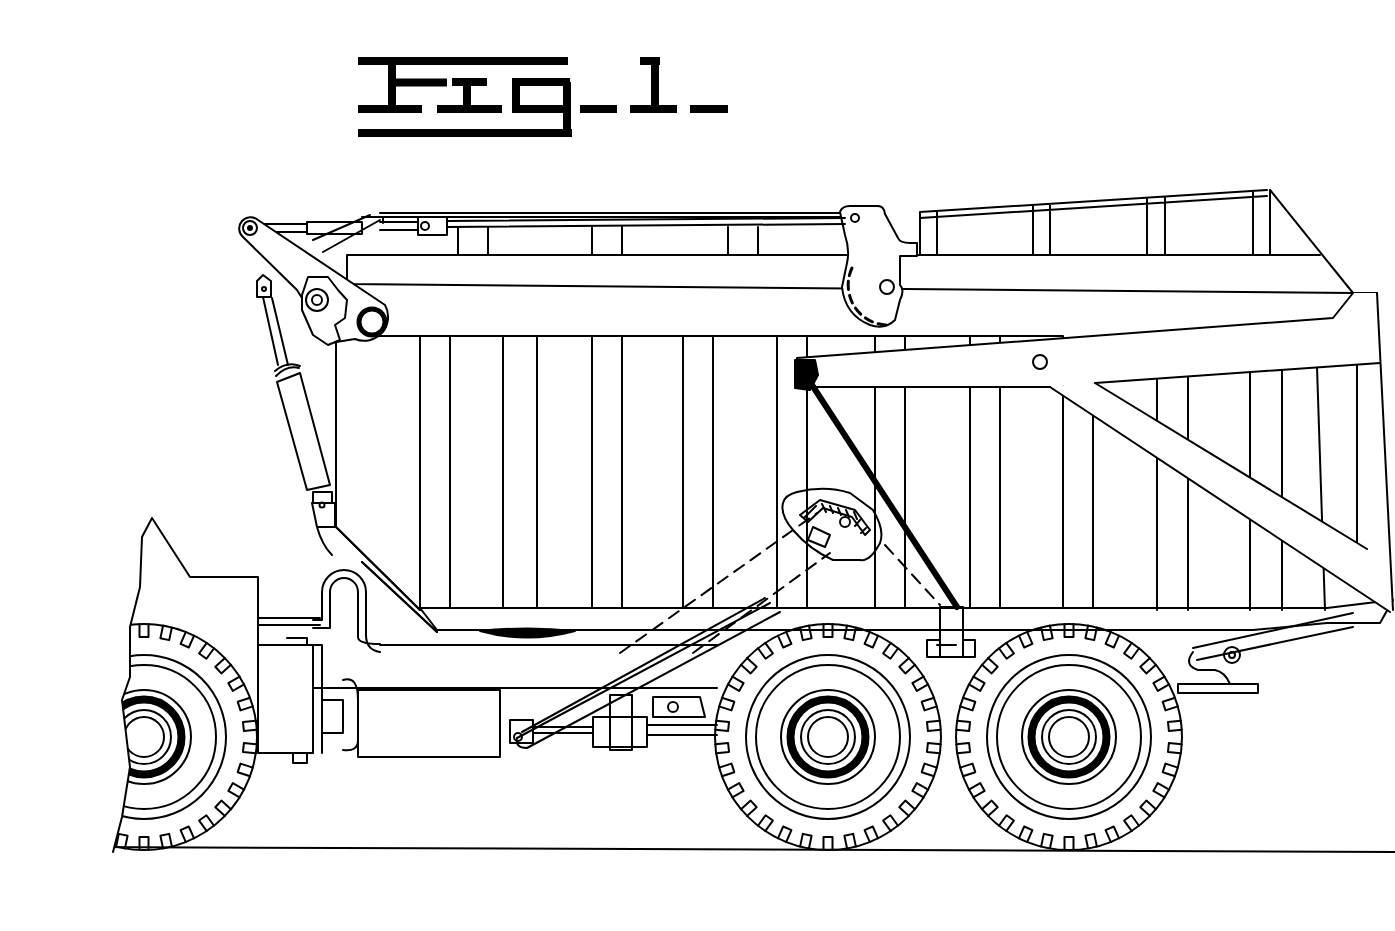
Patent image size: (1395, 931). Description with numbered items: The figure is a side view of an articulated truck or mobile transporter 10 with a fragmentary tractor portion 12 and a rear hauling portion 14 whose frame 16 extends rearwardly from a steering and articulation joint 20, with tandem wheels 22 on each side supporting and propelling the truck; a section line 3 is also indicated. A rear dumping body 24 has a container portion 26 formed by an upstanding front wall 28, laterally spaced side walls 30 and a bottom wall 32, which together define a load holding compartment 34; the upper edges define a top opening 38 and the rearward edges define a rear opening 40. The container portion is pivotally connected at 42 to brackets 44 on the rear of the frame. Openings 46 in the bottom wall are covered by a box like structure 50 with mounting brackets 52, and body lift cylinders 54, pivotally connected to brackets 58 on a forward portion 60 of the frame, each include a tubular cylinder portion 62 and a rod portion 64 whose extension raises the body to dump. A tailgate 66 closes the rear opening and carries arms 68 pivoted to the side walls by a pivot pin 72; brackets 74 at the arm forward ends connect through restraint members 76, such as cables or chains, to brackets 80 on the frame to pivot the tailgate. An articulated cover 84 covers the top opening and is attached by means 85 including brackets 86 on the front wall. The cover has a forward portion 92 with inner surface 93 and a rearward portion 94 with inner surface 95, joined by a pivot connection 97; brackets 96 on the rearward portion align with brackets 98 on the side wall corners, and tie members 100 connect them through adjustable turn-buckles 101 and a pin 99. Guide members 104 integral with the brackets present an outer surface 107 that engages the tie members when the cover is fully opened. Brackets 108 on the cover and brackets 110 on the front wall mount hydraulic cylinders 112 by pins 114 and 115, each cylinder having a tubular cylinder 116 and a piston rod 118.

The section line 3- 3 is at (222, 190).
The articulated truck 10 is at (945, 130).
The tractor portion 12 is at (200, 495).
The rear hauling portion 14 is at (608, 770).
The frame 16 is at (1180, 690).
The steering and articulation joint 20 is at (330, 808).
The tandem wheels 22 is at (1015, 768).
The rear dumping body 24 is at (470, 655).
The container portion 26 is at (577, 463).
The front wall 28 is at (330, 390).
The side walls 30 is at (383, 540).
The bottom wall 32 is at (605, 647).
The load holding compartment 34 is at (580, 300).
The top opening 38 is at (1050, 307).
The rear opening 40 is at (1357, 407).
The pivotal connection 42 is at (1245, 656).
The brackets 44 is at (1249, 685).
The openings 46 is at (740, 547).
The box like structure 50 is at (830, 500).
The mounting brackets 52 is at (855, 555).
The body lift cylinders 54 is at (640, 655).
The brackets 58 is at (522, 748).
The forward portion 60 is at (412, 676).
The tubular cylinder portion 62 is at (610, 673).
The rod portion 64 is at (805, 505).
The tailgate 66 is at (1373, 493).
The arms 68 is at (1125, 362).
The pivot pin 72 is at (1037, 367).
The brackets 74 is at (797, 380).
The restraint members 76 is at (872, 497).
The brackets 80 is at (985, 625).
The articulated cover 84 is at (697, 277).
The means for pivotally connecting 85 is at (285, 315).
The brackets 86 is at (350, 527).
The forward portion 92 is at (640, 273).
The inner surface 93 is at (483, 287).
The rearward portion 94 is at (1217, 245).
The inner surface 95 is at (1113, 293).
The brackets 96 is at (880, 230).
The pivot connection 97 is at (252, 221).
The brackets 98 is at (277, 257).
The pin 99 is at (853, 210).
The tie members 100 is at (770, 218).
The adjustable turn-buckles 101 is at (393, 217).
The guide members 104 is at (842, 300).
The outer surface 107 is at (905, 313).
The brackets 108 is at (310, 233).
The brackets 110 is at (317, 533).
The hydraulic cylinders 112 is at (310, 445).
The pins 114 is at (257, 288).
The pins 115 is at (313, 513).
The tubular cylinder 116 is at (297, 462).
The piston rod 118 is at (275, 350).